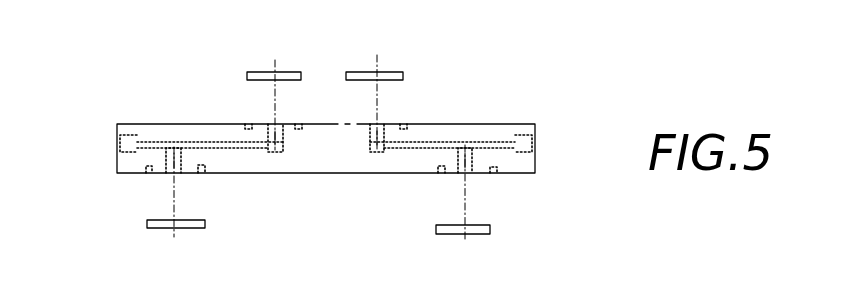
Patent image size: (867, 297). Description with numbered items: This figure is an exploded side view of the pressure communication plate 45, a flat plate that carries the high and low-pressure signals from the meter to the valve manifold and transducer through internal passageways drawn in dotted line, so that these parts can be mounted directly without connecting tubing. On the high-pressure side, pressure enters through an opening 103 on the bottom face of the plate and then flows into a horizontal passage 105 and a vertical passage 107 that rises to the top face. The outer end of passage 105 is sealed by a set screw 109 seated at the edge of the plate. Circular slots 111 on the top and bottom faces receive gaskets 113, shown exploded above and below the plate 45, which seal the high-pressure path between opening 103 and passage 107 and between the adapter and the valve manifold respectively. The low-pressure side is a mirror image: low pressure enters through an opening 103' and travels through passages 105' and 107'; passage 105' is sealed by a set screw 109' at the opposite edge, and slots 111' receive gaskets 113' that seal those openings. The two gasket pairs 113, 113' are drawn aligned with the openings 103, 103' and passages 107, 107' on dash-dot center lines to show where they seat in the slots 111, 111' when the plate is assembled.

The pressure communication plate 45 is at (498, 133).
The opening 103 is at (126, 194).
The opening 103' is at (499, 186).
The passage 105 is at (210, 179).
The passage 105' is at (463, 106).
The passage 107 is at (288, 179).
The passage 107' is at (365, 184).
The set screw 109 is at (83, 143).
The set screw 109' is at (566, 148).
The circular slots 111 is at (171, 134).
The slots 111' is at (448, 144).
The gaskets 113 is at (224, 154).
The gaskets 113' is at (447, 149).